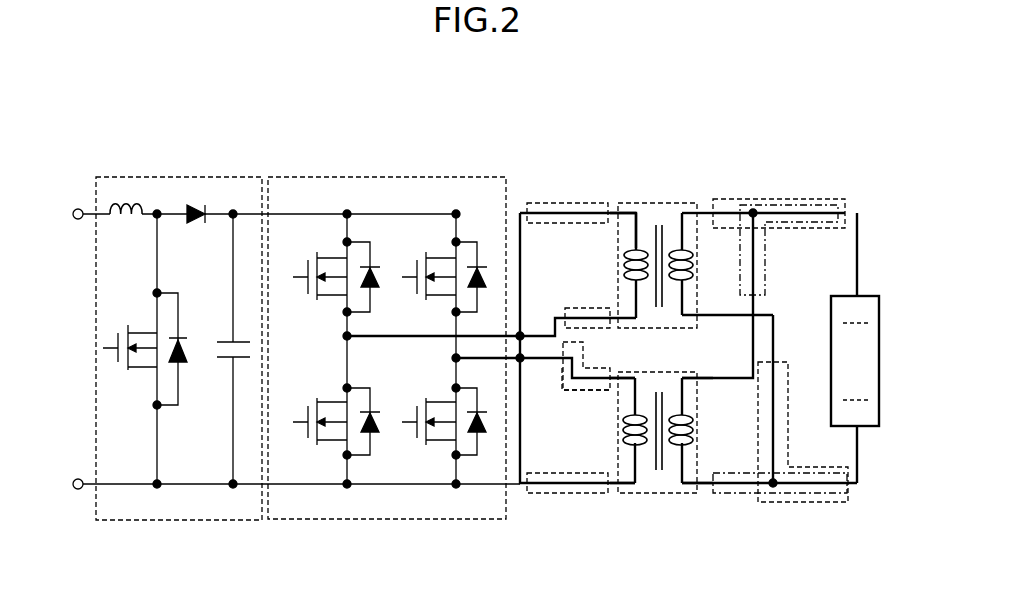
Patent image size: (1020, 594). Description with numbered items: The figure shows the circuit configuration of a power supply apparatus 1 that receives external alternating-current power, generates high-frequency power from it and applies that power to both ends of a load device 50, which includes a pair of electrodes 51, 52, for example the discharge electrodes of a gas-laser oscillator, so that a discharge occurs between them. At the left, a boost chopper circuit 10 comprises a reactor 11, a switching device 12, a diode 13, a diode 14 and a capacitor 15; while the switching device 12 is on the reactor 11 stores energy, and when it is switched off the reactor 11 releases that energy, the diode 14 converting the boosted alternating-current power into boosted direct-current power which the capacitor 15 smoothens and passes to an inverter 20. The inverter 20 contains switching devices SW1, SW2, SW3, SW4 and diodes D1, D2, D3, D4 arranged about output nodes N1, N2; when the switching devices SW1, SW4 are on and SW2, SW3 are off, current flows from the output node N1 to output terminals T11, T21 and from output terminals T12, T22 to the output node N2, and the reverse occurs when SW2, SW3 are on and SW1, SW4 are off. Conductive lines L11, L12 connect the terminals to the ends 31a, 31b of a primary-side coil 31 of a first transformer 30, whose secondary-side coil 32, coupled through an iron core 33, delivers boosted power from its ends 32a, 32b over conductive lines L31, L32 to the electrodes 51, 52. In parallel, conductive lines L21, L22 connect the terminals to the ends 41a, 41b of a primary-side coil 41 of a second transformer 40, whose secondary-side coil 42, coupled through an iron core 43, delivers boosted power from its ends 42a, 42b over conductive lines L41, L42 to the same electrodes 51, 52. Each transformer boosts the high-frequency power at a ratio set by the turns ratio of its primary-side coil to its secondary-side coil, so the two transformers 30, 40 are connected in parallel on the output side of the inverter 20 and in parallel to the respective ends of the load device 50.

The power supply apparatus 1 is at (154, 100).
The boost chopper circuit 10 is at (148, 522).
The reactor 11 is at (118, 224).
The switching device 12 is at (119, 376).
The diode 13 is at (195, 365).
The diode 14 is at (199, 203).
The capacitor 15 is at (221, 334).
The inverter 20 is at (323, 521).
The switching device SW1 is at (313, 248).
The switching device SW2 is at (422, 248).
The switching device SW3 is at (313, 447).
The switching device SW4 is at (422, 447).
The diode D1 is at (388, 287).
The diode D2 is at (497, 286).
The diode D3 is at (383, 422).
The diode D4 is at (485, 440).
The output node N1 is at (335, 311).
The output node N2 is at (445, 362).
The output terminal T11 is at (528, 276).
The output terminal T12 is at (545, 364).
The output terminal T21 is at (542, 332).
The output terminal T22 is at (528, 426).
The conductive line L11 is at (540, 200).
The conductive line L12 is at (584, 343).
The conductive line L21 is at (574, 393).
The conductive line L22 is at (543, 498).
The conductive line L31 is at (727, 197).
The conductive line L32 is at (790, 505).
The conductive line L41 is at (812, 205).
The conductive line L42 is at (725, 497).
The first transformer 30 is at (660, 200).
The primary-side coil 31 is at (643, 246).
The one end of primary-side coil 31a is at (608, 204).
The other end of primary-side coil 31b is at (614, 307).
The secondary-side coil 32 is at (677, 246).
The one end of secondary-side coil 32a is at (703, 224).
The other end of secondary-side coil 32b is at (704, 307).
The iron core 33 is at (658, 308).
The second transformer 40 is at (676, 500).
The primary-side coil 41 is at (645, 445).
The one end of primary-side coil 41a is at (615, 390).
The other end of primary-side coil 41b is at (615, 492).
The secondary-side coil 42 is at (685, 445).
The one end of secondary-side coil 42a is at (705, 382).
The other end of secondary-side coil 42b is at (703, 478).
The iron core 43 is at (669, 461).
The load device 50 is at (862, 295).
The electrode 51 is at (850, 322).
The electrode 52 is at (850, 400).